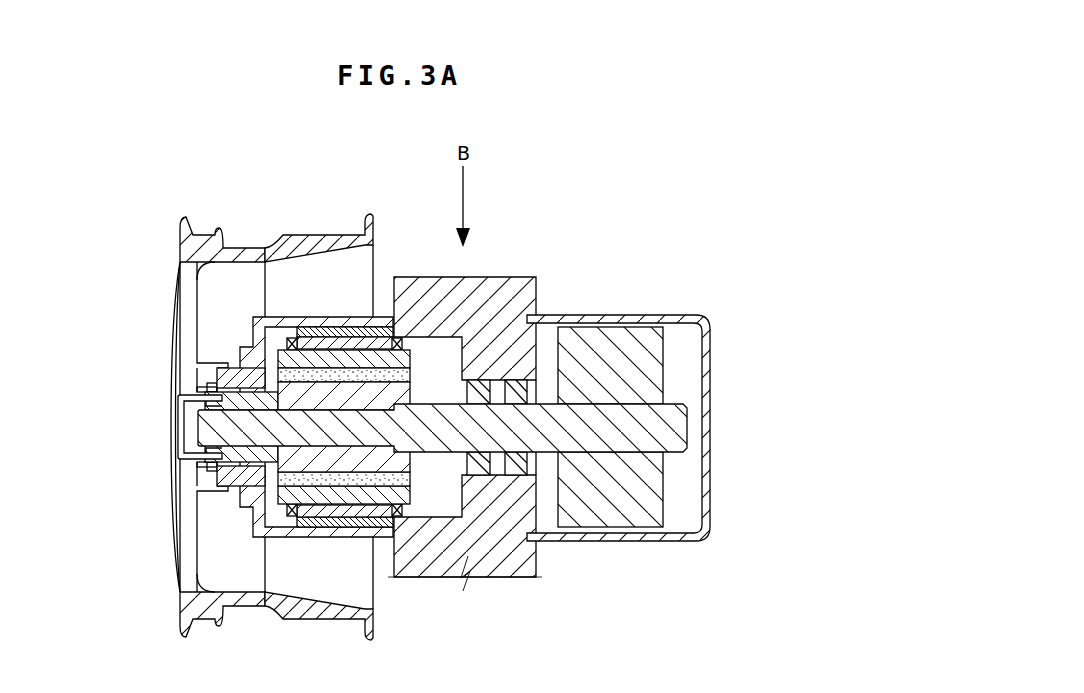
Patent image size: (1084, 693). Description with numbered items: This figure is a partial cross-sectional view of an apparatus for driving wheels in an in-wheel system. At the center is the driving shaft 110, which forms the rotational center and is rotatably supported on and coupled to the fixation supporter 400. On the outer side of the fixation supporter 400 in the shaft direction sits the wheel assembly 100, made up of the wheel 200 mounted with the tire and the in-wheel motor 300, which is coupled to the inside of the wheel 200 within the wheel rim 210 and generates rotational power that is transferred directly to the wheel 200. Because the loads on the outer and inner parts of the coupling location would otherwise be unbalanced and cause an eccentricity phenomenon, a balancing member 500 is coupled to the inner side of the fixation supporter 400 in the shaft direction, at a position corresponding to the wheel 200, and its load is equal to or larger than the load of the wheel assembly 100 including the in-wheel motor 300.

The wheel assembly 100 is at (154, 201).
The wheel 200 is at (329, 399).
The wheel rim 210 is at (298, 233).
The in-wheel motor 300 is at (238, 534).
The fixation supporter 400 is at (500, 558).
The driving shaft 110 is at (594, 436).
The balancing member 500 is at (647, 302).